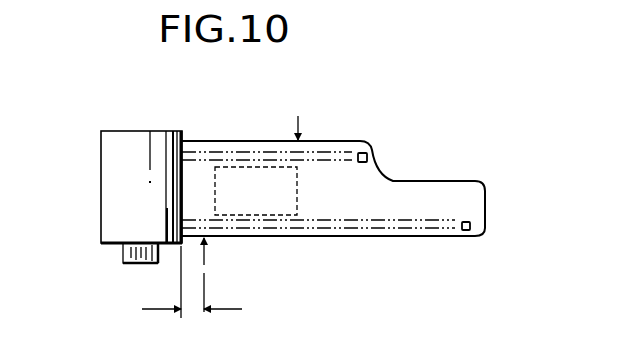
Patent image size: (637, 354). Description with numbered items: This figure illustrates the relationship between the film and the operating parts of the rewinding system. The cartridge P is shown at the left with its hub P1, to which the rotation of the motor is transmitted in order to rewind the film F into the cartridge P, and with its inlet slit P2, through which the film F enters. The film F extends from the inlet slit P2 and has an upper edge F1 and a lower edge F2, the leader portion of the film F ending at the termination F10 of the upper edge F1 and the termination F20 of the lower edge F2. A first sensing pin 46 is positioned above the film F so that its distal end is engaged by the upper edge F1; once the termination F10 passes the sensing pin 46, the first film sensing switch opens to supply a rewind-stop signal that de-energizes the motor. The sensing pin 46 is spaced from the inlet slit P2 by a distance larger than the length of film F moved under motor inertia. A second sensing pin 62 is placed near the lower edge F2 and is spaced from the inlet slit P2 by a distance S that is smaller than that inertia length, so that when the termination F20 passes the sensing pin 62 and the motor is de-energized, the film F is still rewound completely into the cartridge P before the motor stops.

The cartridge P is at (112, 140).
The hub P1 is at (132, 265).
The inlet slit P2 is at (180, 168).
The film F is at (350, 200).
The upper edge of the film F1 is at (333, 145).
The lower edge of the film F2 is at (308, 232).
The termination of the upper edge F10 is at (370, 142).
The termination of the lower edge F20 is at (485, 237).
The sensing pin 46 is at (301, 109).
The sensing pin 62 is at (208, 269).
The distance S is at (192, 295).